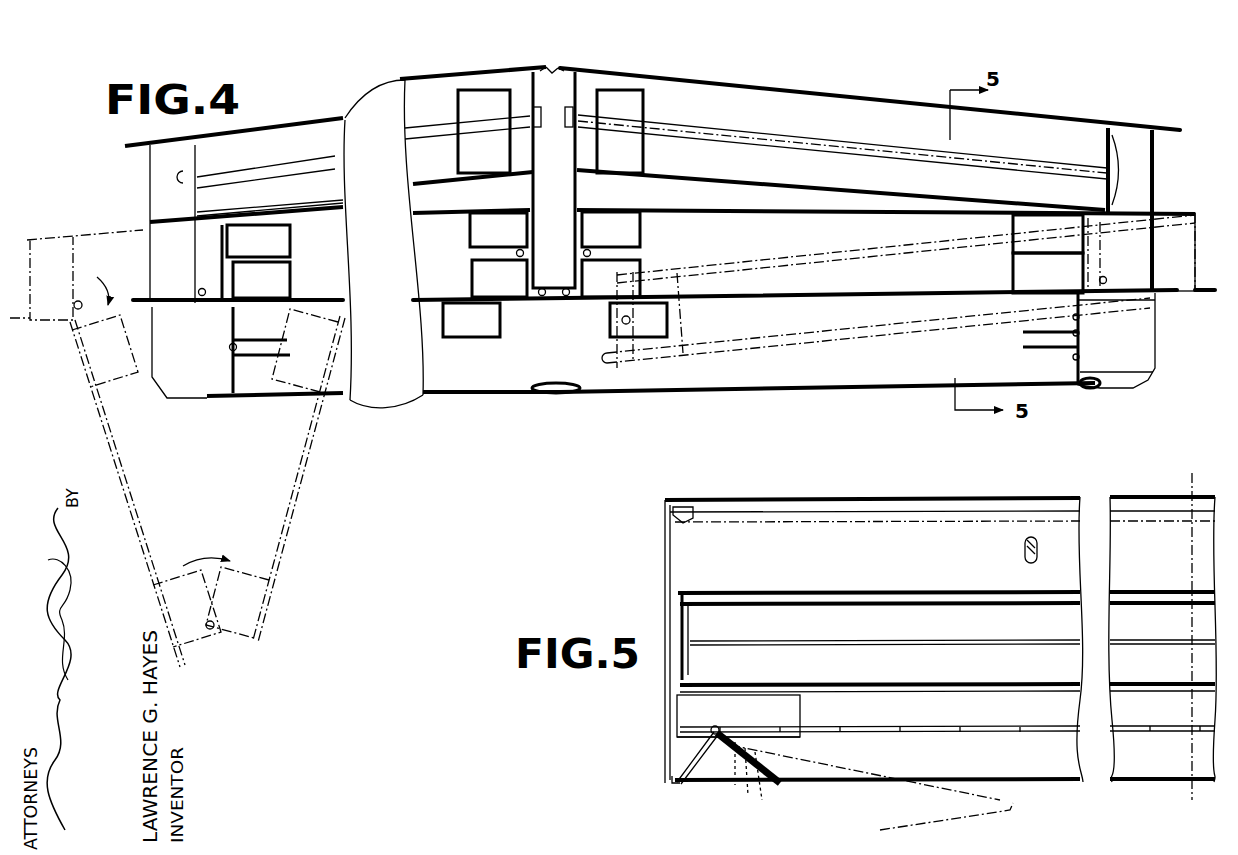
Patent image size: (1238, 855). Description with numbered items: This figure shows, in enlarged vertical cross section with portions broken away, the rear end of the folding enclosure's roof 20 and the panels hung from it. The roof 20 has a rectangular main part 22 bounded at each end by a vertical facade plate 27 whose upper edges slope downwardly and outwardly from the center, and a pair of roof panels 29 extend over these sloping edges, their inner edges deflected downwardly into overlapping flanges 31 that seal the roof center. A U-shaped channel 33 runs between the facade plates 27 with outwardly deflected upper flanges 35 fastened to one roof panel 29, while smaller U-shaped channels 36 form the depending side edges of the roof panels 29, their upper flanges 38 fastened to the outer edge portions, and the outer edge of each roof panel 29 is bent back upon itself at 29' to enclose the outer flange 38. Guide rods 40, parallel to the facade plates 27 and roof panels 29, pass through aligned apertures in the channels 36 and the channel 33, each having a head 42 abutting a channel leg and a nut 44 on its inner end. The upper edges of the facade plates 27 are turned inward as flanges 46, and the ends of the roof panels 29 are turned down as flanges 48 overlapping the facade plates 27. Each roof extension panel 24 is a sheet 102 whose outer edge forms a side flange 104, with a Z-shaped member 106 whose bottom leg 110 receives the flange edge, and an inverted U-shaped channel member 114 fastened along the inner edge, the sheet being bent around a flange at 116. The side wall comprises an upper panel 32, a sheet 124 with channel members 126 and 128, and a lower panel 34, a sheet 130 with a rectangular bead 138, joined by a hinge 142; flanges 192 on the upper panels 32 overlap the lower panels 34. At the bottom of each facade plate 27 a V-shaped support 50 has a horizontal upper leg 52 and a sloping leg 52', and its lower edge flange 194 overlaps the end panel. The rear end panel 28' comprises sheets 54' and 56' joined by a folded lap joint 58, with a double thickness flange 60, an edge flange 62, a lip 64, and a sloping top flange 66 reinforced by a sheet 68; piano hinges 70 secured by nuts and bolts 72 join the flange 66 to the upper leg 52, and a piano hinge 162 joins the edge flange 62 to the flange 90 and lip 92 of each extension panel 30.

In FIG. 4, the roof 20 is at (895, 91).
In FIG. 4, the main part 22 is at (808, 90).
In FIG. 4, the roof extension panel 24 is at (270, 213).
In FIG. 5, the roof extension panel 24 is at (890, 591).
In FIG. 4, the facade plate 27 is at (1150, 343).
In FIG. 5, the facade plate 27 is at (665, 584).
In FIG. 4, the central end panel 28' is at (657, 416).
In FIG. 5, the central end panel 28' is at (914, 811).
In FIG. 4, the roof panel 29 is at (593, 106).
In FIG. 5, the roof panel 29 is at (940, 482).
In FIG. 4, the bent-back outer edge 29' is at (1131, 159).
In FIG. 4, the extension panel 30 is at (433, 305).
In FIG. 5, the extension panel 30 is at (780, 683).
In FIG. 4, the flange 31 is at (541, 70).
In FIG. 4, the upper panel 32 is at (325, 294).
In FIG. 4, the U-shaped channel 33 is at (578, 198).
In FIG. 4, the lower panel 34 is at (445, 213).
In FIG. 5, the lower panel 34 is at (904, 604).
In FIG. 4, the upper flange 35 is at (590, 80).
In FIG. 4, the U-shaped channel 36 is at (146, 169).
In FIG. 4, the upper flange 38 is at (1160, 130).
In FIG. 5, the upper flange 38 is at (813, 520).
In FIG. 4, the guide rod 40 is at (260, 170).
In FIG. 5, the guide rod 40 is at (1025, 545).
In FIG. 4, the head 42 is at (1108, 130).
In FIG. 4, the nut 44 is at (568, 127).
In FIG. 5, the flange 46 is at (683, 505).
In FIG. 5, the flange 48 is at (665, 515).
In FIG. 4, the support 50 is at (908, 350).
In FIG. 5, the support 50 is at (692, 771).
In FIG. 5, the upper leg 52 is at (714, 716).
In FIG. 5, the sloping leg 52' is at (715, 750).
In FIG. 4, the sheet of metal 54' is at (383, 411).
In FIG. 4, the sheet of metal 56' is at (827, 402).
In FIG. 5, the sheet of metal 56' is at (1112, 794).
In FIG. 4, the folded lap joint 58 is at (555, 396).
In FIG. 4, the double thickness flange 60 is at (1090, 390).
In FIG. 4, the edge flange 62 is at (1080, 371).
In FIG. 5, the edge flange 62 is at (928, 762).
In FIG. 4, the lip 64 is at (1030, 348).
In FIG. 5, the sloping flange 66 is at (760, 770).
In FIG. 5, the reinforcing sheet 68 is at (780, 777).
In FIG. 5, the piano hinge 70 is at (722, 727).
In FIG. 5, the nut and bolt 72 is at (714, 728).
In FIG. 4, the flange 90 is at (1076, 330).
In FIG. 5, the flange 90 is at (905, 710).
In FIG. 4, the lip 92 is at (1022, 333).
In FIG. 4, the sheet of metal 102 is at (330, 206).
In FIG. 4, the side flange 104 is at (1155, 263).
In FIG. 4, the Z-shaped member 106 is at (1112, 246).
In FIG. 4, the bottom leg 110 is at (1146, 302).
In FIG. 4, the inverted U-shaped channel member 114 is at (643, 110).
In FIG. 4, the bent inner edge 116 is at (597, 190).
In FIG. 4, the sheet of metal 124 is at (348, 297).
In FIG. 4, the U-shaped channel member 126 is at (1013, 262).
In FIG. 5, the U-shaped channel member 126 is at (987, 660).
In FIG. 4, the U-shaped channel member 128 is at (645, 270).
In FIG. 4, the sheet of metal 130 is at (762, 207).
In FIG. 5, the sheet of metal 130 is at (838, 604).
In FIG. 4, the rectangular bead 138 is at (645, 231).
In FIG. 4, the hinge 142 is at (583, 255).
In FIG. 4, the piano hinge 162 is at (230, 347).
In FIG. 5, the piano hinge 162 is at (1022, 730).
In FIG. 4, the flange 192 is at (568, 296).
In FIG. 5, the lower edge flange 194 is at (675, 779).